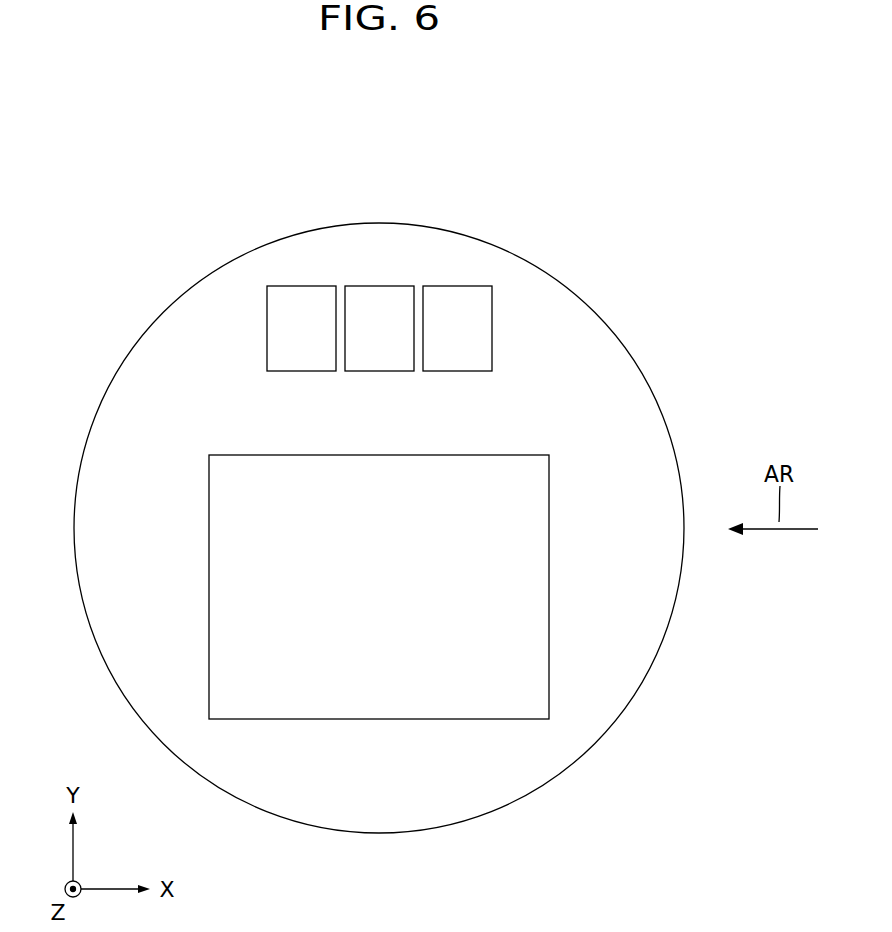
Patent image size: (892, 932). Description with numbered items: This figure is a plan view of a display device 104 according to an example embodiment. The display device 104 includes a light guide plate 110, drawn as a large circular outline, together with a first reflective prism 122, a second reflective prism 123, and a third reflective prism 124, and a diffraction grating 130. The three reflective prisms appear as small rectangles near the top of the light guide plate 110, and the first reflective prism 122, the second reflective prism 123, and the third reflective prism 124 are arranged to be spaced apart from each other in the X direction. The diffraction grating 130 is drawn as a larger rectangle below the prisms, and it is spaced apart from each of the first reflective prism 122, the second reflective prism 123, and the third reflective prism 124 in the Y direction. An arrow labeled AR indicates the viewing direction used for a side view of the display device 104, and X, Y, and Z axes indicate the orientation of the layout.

The display device 104 is at (96, 137).
The light guide plate 110 is at (591, 307).
The first reflective prism 122 is at (302, 292).
The second reflective prism 123 is at (379, 292).
The third reflective prism 124 is at (457, 292).
The diffraction grating 130 is at (549, 478).